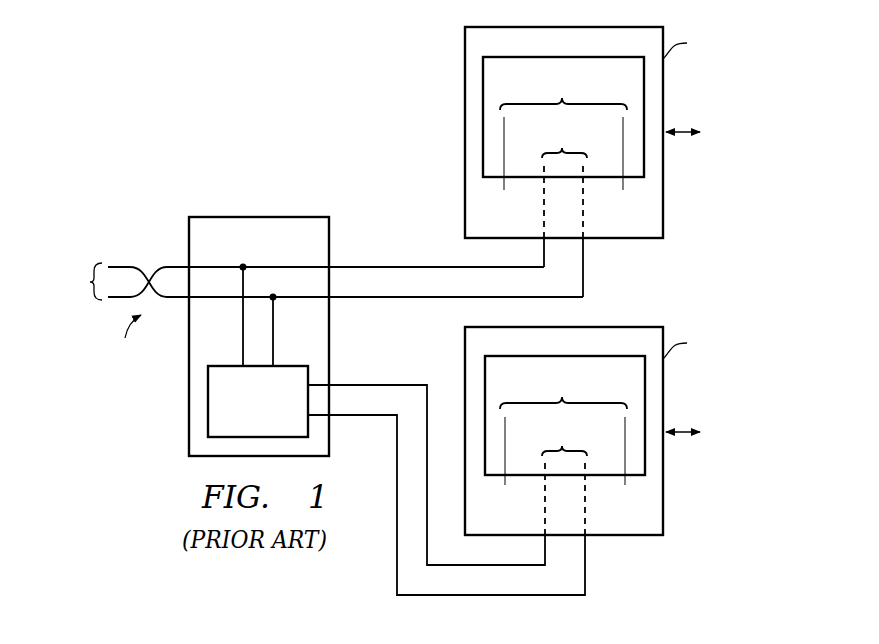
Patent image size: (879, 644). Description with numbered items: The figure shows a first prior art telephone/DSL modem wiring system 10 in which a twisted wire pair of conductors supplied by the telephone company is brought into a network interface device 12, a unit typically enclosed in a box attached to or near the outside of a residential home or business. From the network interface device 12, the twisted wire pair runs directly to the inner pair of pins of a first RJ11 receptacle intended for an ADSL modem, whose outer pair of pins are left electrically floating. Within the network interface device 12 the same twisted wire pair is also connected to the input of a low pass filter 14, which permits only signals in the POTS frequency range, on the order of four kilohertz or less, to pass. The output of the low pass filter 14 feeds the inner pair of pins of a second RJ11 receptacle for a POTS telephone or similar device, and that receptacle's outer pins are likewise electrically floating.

The telephone/DSL modem wiring system 10 is at (160, 85).
The network interface device 12 is at (257, 217).
The low pass filter 14 is at (271, 426).